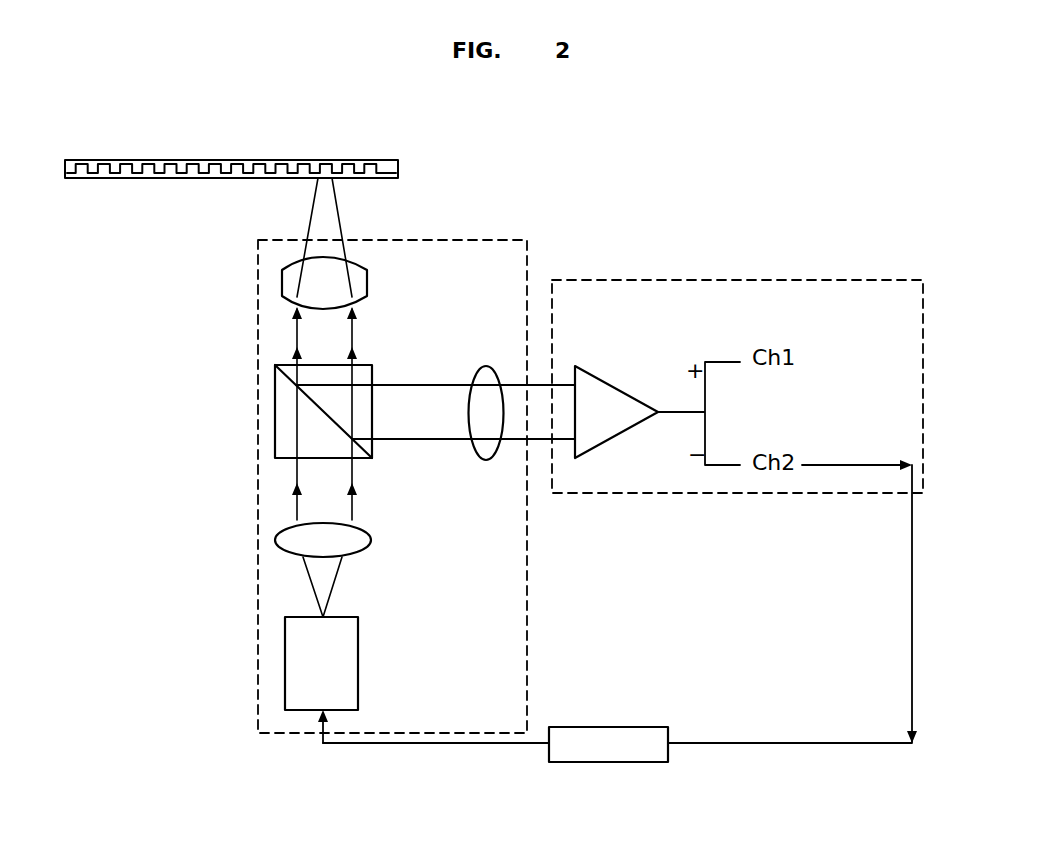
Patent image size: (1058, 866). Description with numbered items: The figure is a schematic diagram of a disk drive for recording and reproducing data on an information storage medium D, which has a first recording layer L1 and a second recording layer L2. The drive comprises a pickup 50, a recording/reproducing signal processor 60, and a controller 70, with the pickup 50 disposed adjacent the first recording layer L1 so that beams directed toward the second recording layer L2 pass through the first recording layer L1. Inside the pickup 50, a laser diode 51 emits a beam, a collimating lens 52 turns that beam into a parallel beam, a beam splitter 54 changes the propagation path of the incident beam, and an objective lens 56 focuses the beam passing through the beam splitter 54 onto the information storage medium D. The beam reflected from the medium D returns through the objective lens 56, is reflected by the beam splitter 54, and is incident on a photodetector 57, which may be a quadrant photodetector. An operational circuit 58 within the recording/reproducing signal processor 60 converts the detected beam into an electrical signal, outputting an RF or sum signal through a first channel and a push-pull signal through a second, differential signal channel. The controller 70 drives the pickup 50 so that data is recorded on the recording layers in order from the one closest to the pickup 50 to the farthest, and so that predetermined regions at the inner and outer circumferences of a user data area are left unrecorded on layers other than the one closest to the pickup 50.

The information storage medium D is at (255, 161).
The first recording layer L1 is at (398, 176).
The second recording layer L2 is at (398, 163).
The pickup 50 is at (258, 691).
The laser diode 51 is at (285, 630).
The collimating lens 52 is at (278, 540).
The beam splitter 54 is at (275, 383).
The objective lens 56 is at (282, 276).
The photodetector 57 is at (486, 367).
The operational circuit 58 is at (621, 388).
The recording/reproducing signal processor 60 is at (672, 280).
The controller 70 is at (616, 727).